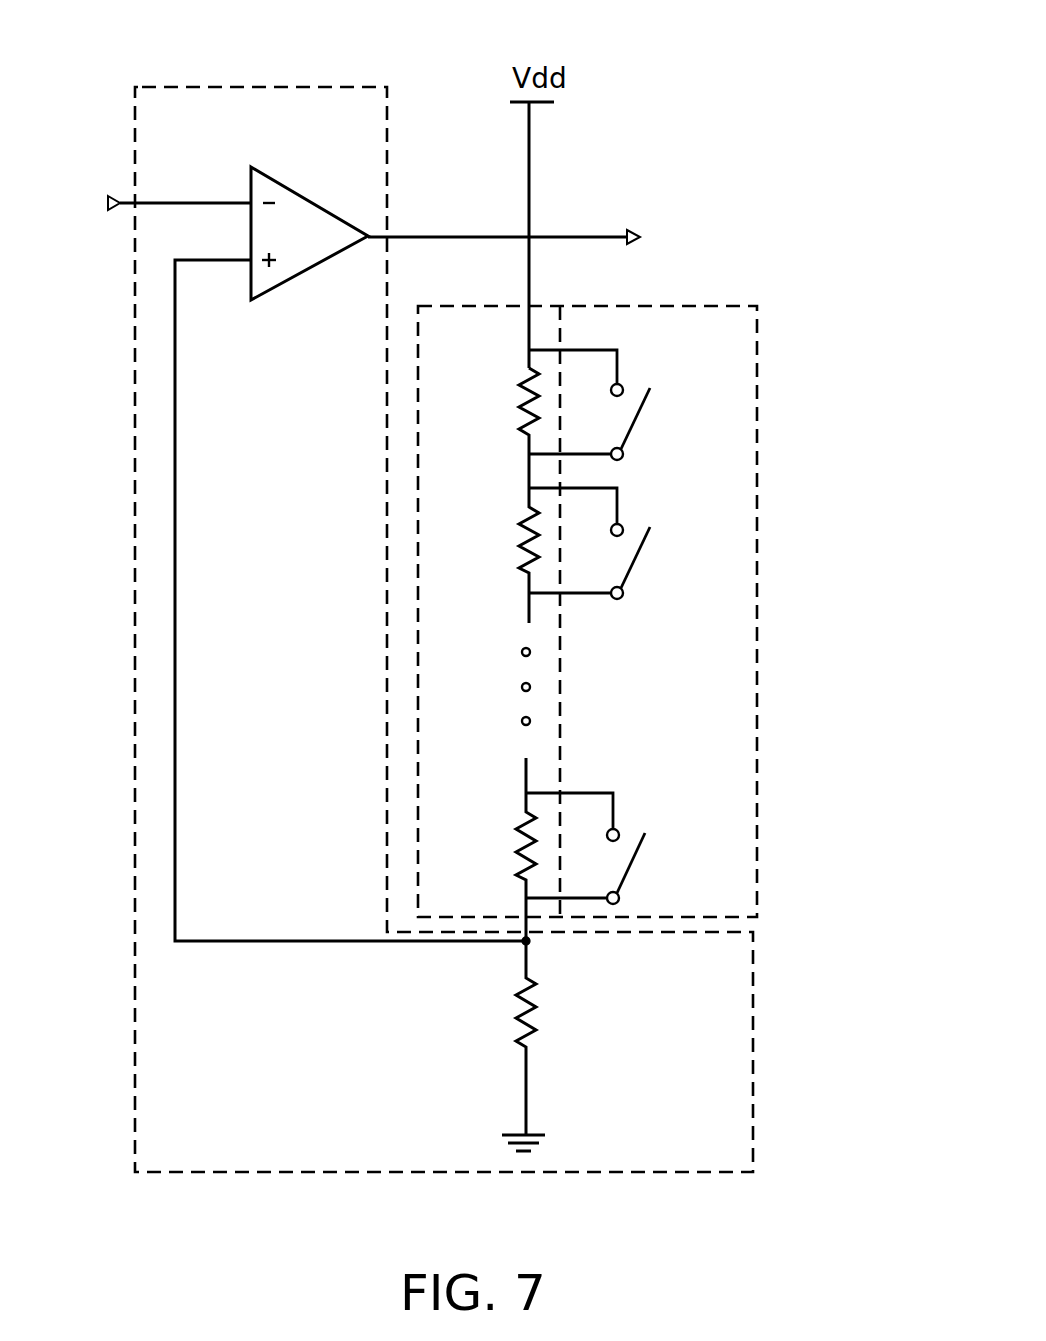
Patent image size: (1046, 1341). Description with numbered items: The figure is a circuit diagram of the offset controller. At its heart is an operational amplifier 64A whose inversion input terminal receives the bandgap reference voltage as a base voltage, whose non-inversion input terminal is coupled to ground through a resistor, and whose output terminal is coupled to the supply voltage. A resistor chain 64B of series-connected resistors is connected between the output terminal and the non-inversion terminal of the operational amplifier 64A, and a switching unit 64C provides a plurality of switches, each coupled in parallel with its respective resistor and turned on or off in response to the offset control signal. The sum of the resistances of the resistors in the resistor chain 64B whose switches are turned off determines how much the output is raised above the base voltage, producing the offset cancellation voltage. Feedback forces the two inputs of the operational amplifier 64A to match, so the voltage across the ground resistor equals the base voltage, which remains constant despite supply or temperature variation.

The operational amplifier 64A is at (275, 87).
The resistor chain 64B is at (465, 306).
The switching unit 64C is at (757, 612).